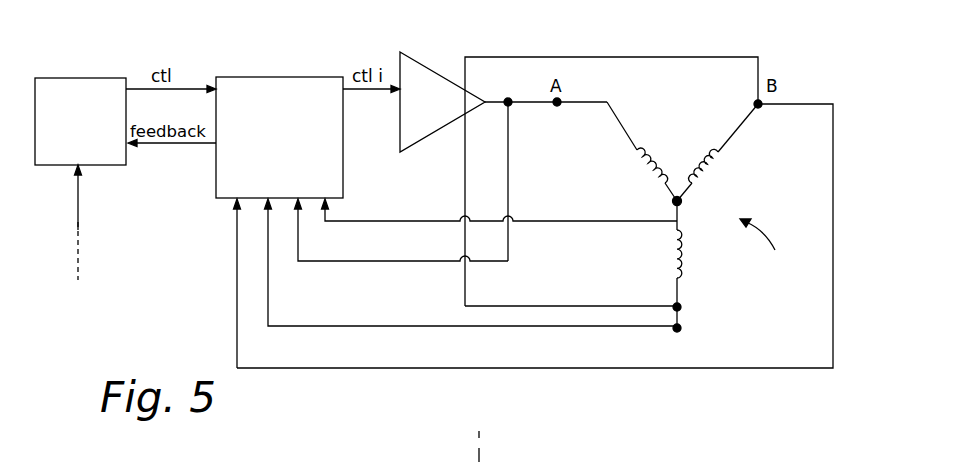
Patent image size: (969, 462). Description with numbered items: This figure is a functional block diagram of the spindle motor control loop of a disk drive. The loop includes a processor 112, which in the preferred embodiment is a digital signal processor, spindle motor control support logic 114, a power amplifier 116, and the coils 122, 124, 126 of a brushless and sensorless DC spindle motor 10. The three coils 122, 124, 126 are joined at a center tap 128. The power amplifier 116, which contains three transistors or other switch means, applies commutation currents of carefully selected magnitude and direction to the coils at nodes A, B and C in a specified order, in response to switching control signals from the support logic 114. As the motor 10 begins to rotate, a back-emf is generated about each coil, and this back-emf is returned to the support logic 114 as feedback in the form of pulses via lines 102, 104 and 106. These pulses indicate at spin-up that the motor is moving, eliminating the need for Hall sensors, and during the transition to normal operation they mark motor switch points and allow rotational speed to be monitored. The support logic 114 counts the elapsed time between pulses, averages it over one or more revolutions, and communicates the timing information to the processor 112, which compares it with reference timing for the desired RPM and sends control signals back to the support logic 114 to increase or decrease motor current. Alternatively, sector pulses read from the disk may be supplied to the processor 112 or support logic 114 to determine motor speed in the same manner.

The spindle motor 10 is at (682, 209).
The line 102 is at (380, 261).
The line 104 is at (380, 326).
The line 106 is at (380, 368).
The processor 112 is at (88, 78).
The spindle motor control support logic 114 is at (327, 77).
The power amplifier 116 is at (410, 52).
The coil 122 is at (642, 163).
The coil 124 is at (723, 163).
The coil 126 is at (682, 258).
The center tap 128 is at (673, 203).